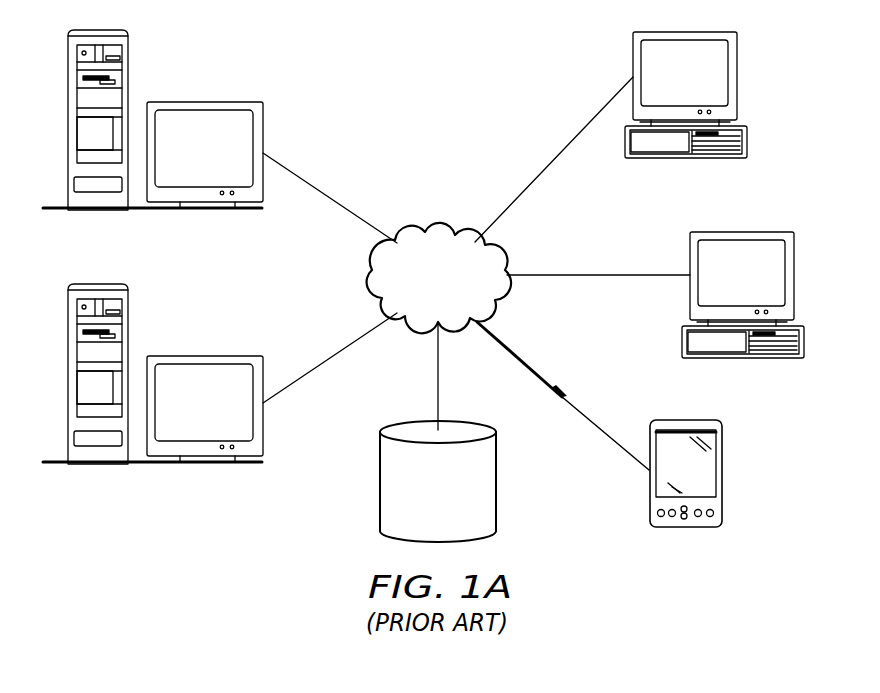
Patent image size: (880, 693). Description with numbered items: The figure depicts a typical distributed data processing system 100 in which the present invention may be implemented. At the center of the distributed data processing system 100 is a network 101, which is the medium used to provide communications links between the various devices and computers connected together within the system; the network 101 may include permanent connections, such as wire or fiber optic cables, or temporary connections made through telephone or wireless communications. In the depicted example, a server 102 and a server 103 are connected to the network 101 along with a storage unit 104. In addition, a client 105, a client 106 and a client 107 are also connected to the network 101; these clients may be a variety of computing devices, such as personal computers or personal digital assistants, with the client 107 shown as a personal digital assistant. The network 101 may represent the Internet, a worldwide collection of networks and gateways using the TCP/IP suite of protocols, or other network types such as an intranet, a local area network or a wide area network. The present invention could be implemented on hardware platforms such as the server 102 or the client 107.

The distributed data processing system 100 is at (495, 69).
The network 101 is at (456, 305).
The server 102 is at (153, 389).
The server 103 is at (226, 161).
The storage unit 104 is at (459, 518).
The client 105 is at (705, 83).
The client 106 is at (743, 308).
The client 107 is at (723, 473).